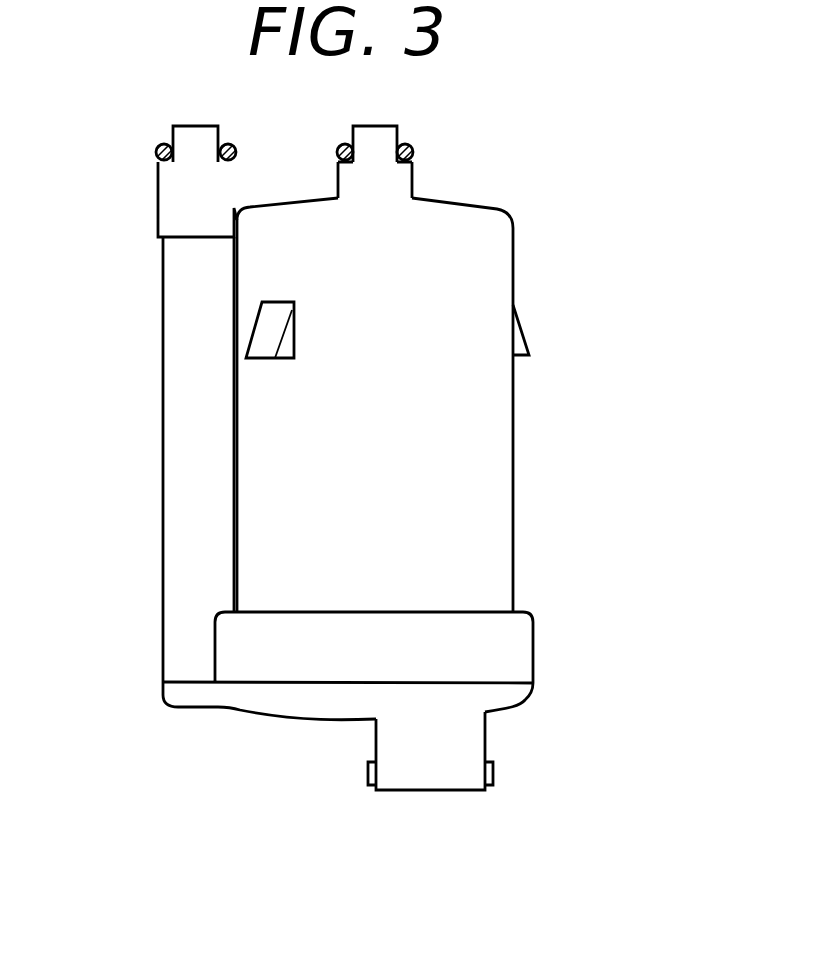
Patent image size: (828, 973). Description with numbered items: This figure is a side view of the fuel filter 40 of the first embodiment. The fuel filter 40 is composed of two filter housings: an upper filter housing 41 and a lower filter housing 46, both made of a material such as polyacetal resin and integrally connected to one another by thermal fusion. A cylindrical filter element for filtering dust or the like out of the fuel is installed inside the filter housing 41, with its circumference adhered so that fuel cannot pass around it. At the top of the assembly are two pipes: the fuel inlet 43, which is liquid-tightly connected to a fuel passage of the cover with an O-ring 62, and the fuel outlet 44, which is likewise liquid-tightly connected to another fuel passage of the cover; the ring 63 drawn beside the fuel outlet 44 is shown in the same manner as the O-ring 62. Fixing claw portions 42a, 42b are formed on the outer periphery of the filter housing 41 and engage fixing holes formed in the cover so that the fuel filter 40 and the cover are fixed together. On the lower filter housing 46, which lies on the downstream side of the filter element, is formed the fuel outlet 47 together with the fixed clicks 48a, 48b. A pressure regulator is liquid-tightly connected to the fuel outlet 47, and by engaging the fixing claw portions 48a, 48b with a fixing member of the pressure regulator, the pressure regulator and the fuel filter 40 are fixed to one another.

The fuel filter 40 is at (160, 353).
The filter housing 41 is at (505, 488).
The fixing claw portion 42a is at (525, 337).
The fixing claw portion 42b is at (290, 338).
The fuel inlet 43 is at (388, 132).
The fuel outlet 44 is at (180, 130).
The filter housing 46 is at (525, 697).
The fuel outlet 47 is at (415, 780).
The fixing claw portion 48a is at (494, 770).
The fixing claw portion 48b is at (367, 772).
The O-ring 62 is at (337, 150).
The O-ring 63 is at (155, 150).